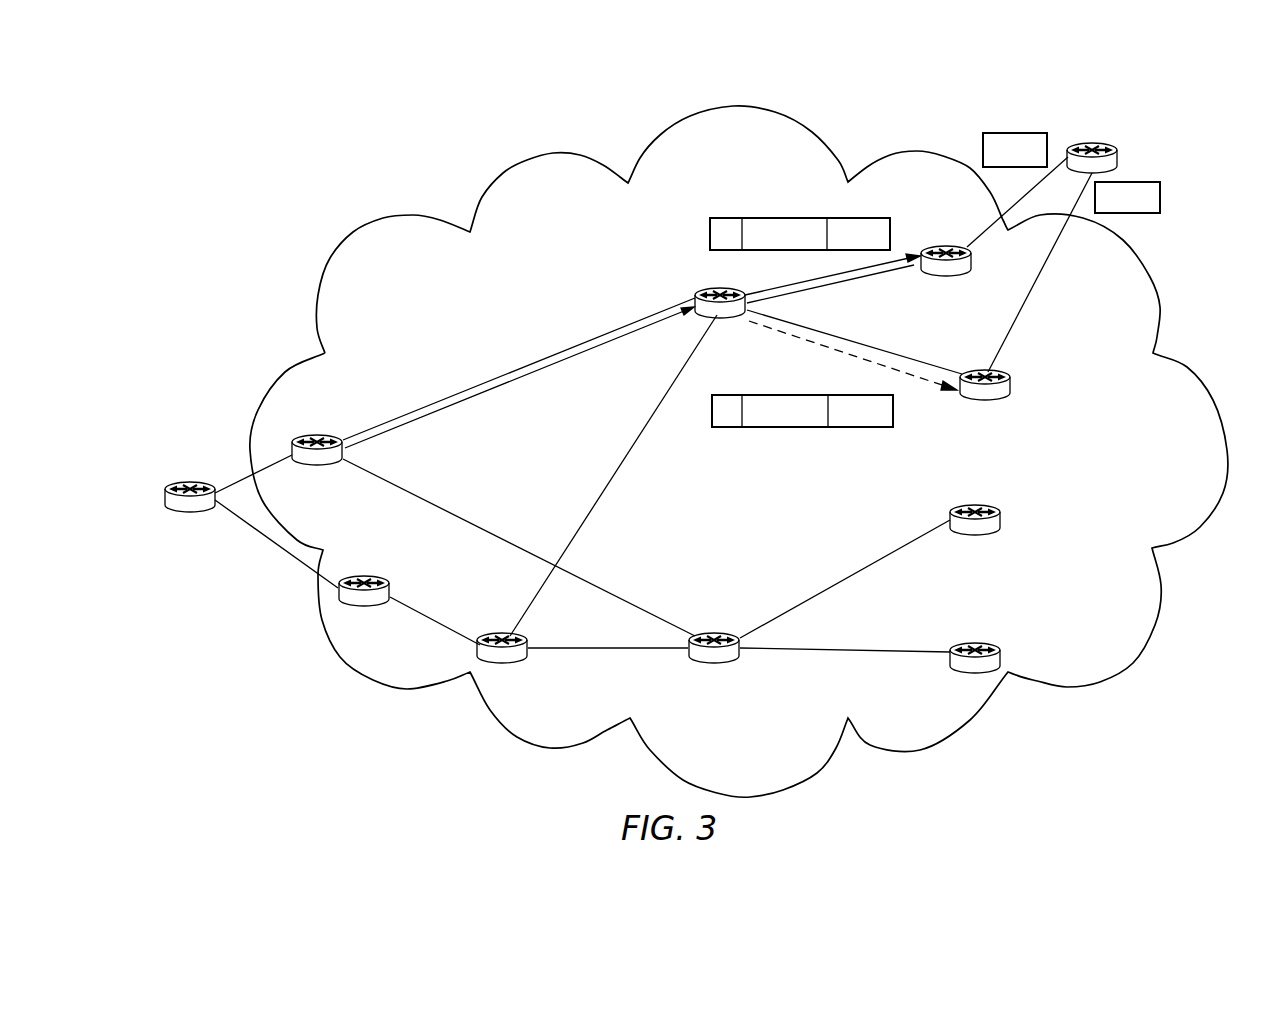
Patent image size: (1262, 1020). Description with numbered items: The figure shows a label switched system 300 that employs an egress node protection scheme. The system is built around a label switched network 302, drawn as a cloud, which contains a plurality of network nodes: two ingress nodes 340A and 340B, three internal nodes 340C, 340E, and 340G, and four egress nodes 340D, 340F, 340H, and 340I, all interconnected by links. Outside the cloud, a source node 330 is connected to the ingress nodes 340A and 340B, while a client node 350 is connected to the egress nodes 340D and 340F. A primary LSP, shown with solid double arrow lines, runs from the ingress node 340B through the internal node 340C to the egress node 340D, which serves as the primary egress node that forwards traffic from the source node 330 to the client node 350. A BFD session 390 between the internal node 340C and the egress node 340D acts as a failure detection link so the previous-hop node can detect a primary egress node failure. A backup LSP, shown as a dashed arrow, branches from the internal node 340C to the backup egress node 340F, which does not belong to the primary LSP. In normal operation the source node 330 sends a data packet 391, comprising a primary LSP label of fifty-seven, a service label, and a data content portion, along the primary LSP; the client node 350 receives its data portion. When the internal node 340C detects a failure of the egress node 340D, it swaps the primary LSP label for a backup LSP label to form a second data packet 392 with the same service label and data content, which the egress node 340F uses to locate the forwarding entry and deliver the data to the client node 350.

The label switched system 300 is at (285, 138).
The label switched network 302 is at (817, 136).
The source node 330 is at (165, 496).
The ingress node 340A is at (368, 577).
The ingress node 340B is at (318, 463).
The internal node 340C is at (703, 290).
The egress node 340D is at (950, 274).
The internal node 340E is at (503, 663).
The egress node 340F is at (1012, 385).
The internal node 340G is at (718, 663).
The egress node 340H is at (1000, 517).
The egress node 340I is at (980, 645).
The client node 350 is at (1117, 153).
The BFD session 390 is at (847, 280).
The data packet 391 is at (860, 218).
The second data packet 392 is at (862, 427).